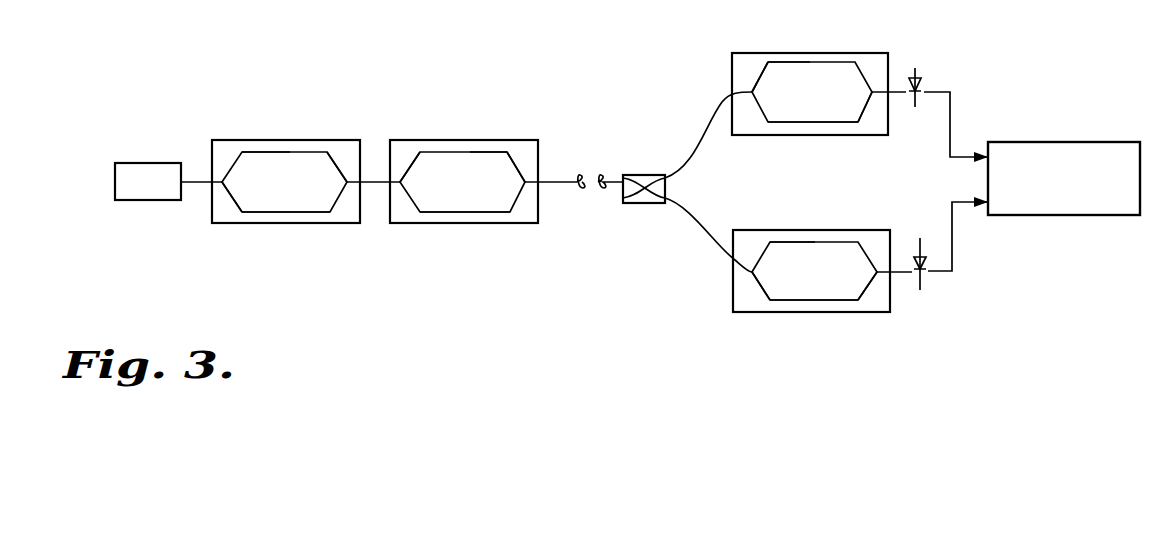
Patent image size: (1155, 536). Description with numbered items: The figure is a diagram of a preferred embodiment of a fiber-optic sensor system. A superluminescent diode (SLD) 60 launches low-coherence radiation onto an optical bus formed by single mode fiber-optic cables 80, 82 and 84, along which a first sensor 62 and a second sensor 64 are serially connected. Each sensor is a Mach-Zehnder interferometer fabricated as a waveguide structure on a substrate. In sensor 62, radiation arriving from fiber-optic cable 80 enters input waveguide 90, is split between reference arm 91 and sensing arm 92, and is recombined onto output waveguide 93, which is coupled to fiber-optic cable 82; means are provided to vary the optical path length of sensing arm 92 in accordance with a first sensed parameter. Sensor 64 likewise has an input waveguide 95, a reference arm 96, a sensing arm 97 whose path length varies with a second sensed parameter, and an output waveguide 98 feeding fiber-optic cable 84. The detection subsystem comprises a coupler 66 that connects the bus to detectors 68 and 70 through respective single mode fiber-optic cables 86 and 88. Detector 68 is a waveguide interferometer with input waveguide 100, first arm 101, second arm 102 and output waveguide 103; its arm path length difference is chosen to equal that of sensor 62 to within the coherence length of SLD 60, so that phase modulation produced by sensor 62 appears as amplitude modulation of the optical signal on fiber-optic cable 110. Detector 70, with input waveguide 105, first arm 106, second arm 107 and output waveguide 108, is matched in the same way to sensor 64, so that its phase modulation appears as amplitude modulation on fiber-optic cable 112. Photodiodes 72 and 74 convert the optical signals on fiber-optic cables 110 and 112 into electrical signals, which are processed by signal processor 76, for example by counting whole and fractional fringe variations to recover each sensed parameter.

The superluminescent diode (SLD) 60 is at (147, 162).
The single mode fiber-optic cable 80 is at (208, 182).
The sensor 62 is at (284, 139).
The reference arm (waveguide) 91 is at (262, 152).
The output waveguide 93 is at (348, 180).
The input waveguide 90 is at (220, 183).
The sensing arm (waveguide) 92 is at (317, 212).
The single mode fiber-optic cable 82 is at (377, 183).
The sensor 64 is at (466, 136).
The input waveguide 95 is at (400, 182).
The reference arm (waveguide) 96 is at (488, 150).
The output waveguide 98 is at (525, 172).
The sensing arm (waveguide) 97 is at (460, 212).
The single mode fiber-optic cable 84 is at (567, 180).
The coupler 66 is at (653, 157).
The single mode fiber-optic cable 86 is at (712, 115).
The single mode fiber-optic cable 88 is at (700, 228).
The detector 68 is at (822, 51).
The input waveguide 100 is at (750, 93).
The first arm (waveguide) 101 is at (785, 62).
The second arm (waveguide) 102 is at (807, 122).
The output waveguide 103 is at (877, 95).
The fiber-optic cable 110 is at (893, 92).
The photodiode 72 is at (925, 72).
The detector 70 is at (827, 227).
The first arm (waveguide) 106 is at (796, 240).
The input waveguide 105 is at (752, 273).
The second arm (waveguide) 107 is at (817, 300).
The output waveguide 108 is at (878, 273).
The fiber-optic cable 112 is at (902, 270).
The photodiode 74 is at (927, 278).
The signal processor 76 is at (1062, 142).